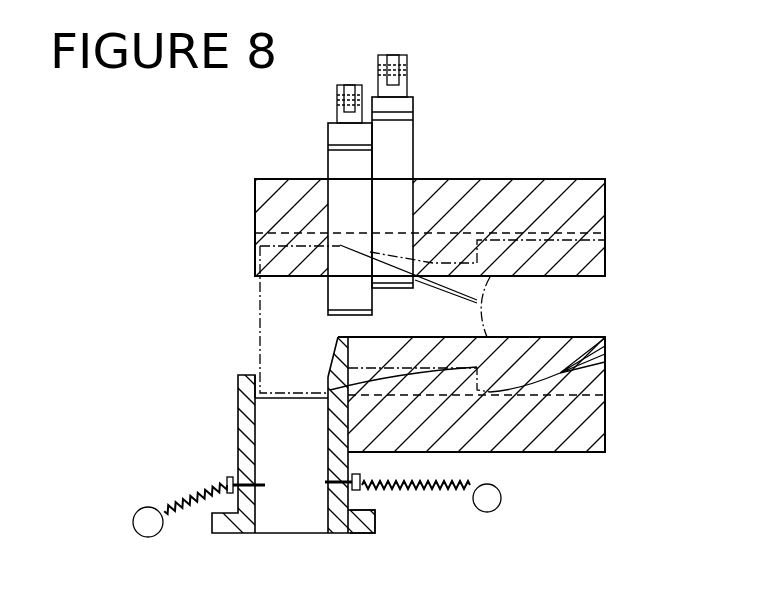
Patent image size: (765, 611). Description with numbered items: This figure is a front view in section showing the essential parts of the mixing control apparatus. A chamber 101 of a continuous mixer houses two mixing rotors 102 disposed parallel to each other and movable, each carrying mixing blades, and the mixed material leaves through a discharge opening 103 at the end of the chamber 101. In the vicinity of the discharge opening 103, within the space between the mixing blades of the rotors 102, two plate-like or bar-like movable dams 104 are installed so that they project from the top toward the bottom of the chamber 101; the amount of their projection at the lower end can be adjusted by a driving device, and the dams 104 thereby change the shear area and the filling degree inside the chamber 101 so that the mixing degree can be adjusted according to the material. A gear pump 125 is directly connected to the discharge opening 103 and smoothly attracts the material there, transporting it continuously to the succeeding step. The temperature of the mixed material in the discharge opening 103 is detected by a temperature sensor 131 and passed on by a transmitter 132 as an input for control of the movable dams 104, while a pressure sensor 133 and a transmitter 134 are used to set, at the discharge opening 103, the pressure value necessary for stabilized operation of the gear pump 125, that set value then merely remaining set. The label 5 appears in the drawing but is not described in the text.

The fitting assembly 5 is at (368, 70).
The chamber 101 is at (540, 178).
The mixing rotor 102 is at (562, 376).
The discharge opening 103 is at (378, 526).
The movable dam 104 is at (352, 203).
The gear pump 125 is at (318, 594).
The temperature sensor 131 is at (265, 484).
The transmitter 132 is at (155, 538).
The pressure sensor 133 is at (324, 483).
The transmitter 134 is at (498, 510).